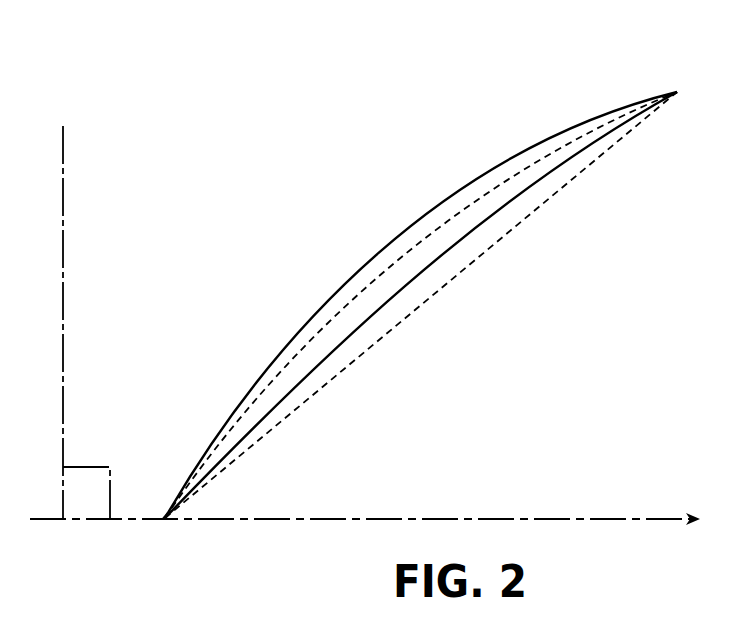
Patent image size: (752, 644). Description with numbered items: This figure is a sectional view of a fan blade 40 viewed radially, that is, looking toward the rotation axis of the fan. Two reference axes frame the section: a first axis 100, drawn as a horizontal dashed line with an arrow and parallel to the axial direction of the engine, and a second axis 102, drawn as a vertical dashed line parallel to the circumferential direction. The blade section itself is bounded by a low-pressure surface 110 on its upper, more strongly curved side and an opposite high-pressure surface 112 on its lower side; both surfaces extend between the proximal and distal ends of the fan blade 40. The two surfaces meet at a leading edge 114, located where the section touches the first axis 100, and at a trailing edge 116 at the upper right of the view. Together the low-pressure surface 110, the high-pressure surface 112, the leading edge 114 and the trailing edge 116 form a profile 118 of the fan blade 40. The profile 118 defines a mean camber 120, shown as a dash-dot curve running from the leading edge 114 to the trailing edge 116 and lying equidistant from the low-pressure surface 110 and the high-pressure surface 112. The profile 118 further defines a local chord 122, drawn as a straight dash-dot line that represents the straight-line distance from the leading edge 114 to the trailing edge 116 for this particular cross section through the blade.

The fan blade 40 is at (415, 297).
The first axis 100 is at (560, 517).
The second axis 102 is at (63, 205).
The low-pressure surface 110 is at (432, 212).
The high-pressure surface 112 is at (518, 195).
The leading edge 114 is at (165, 519).
The trailing edge 116 is at (677, 90).
The profile 118 is at (352, 249).
The mean camber 120 is at (372, 287).
The local chord 122 is at (485, 248).